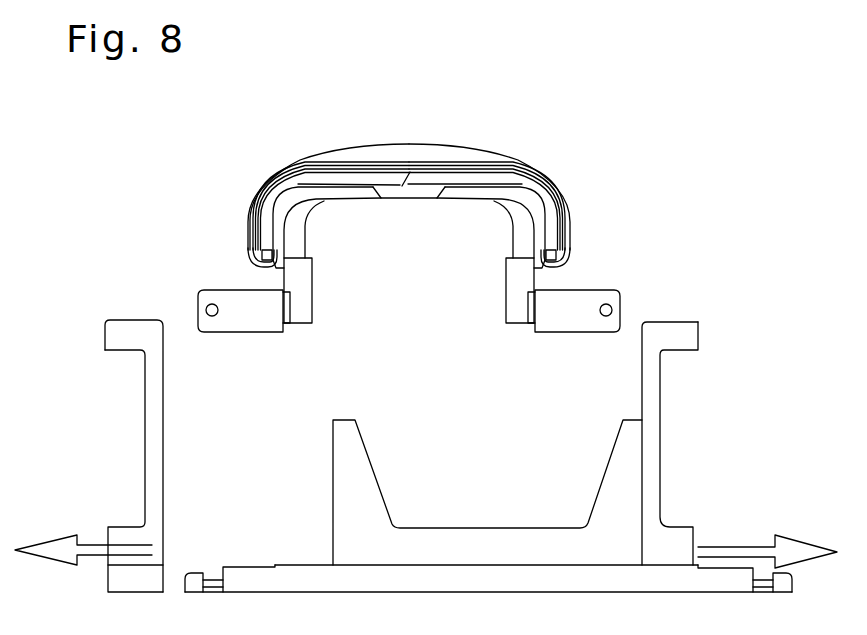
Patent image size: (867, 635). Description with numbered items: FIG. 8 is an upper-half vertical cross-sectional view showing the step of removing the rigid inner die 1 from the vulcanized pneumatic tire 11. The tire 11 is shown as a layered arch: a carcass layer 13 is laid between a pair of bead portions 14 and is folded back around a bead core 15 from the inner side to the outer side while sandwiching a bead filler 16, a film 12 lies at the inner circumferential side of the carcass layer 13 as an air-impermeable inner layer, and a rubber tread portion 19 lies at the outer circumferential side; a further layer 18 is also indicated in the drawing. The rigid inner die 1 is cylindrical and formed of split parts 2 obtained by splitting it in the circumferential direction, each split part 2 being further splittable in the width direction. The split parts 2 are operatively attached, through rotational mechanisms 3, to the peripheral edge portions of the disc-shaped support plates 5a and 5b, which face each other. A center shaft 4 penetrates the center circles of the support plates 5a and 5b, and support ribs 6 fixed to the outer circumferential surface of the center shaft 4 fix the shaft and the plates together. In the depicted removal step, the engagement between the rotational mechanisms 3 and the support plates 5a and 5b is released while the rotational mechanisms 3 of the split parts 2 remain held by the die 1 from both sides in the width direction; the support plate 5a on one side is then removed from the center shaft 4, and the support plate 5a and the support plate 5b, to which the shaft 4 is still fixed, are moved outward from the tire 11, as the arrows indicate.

The rigid inner die 1 is at (574, 163).
The split parts 2 is at (281, 163).
The rotational mechanisms 3 is at (217, 313).
The center shaft 4 is at (478, 578).
The support plate 5a is at (157, 433).
The support plate 5b is at (652, 442).
The support ribs 6 is at (352, 468).
The pneumatic tire 11 is at (420, 165).
The film 12 is at (484, 165).
The carcass layer 13 is at (446, 165).
The bead portions 14 is at (258, 263).
The bead core 15 is at (258, 255).
The bead filler 16 is at (252, 243).
The surface layer 18 is at (341, 168).
The tread portion 19 is at (380, 165).